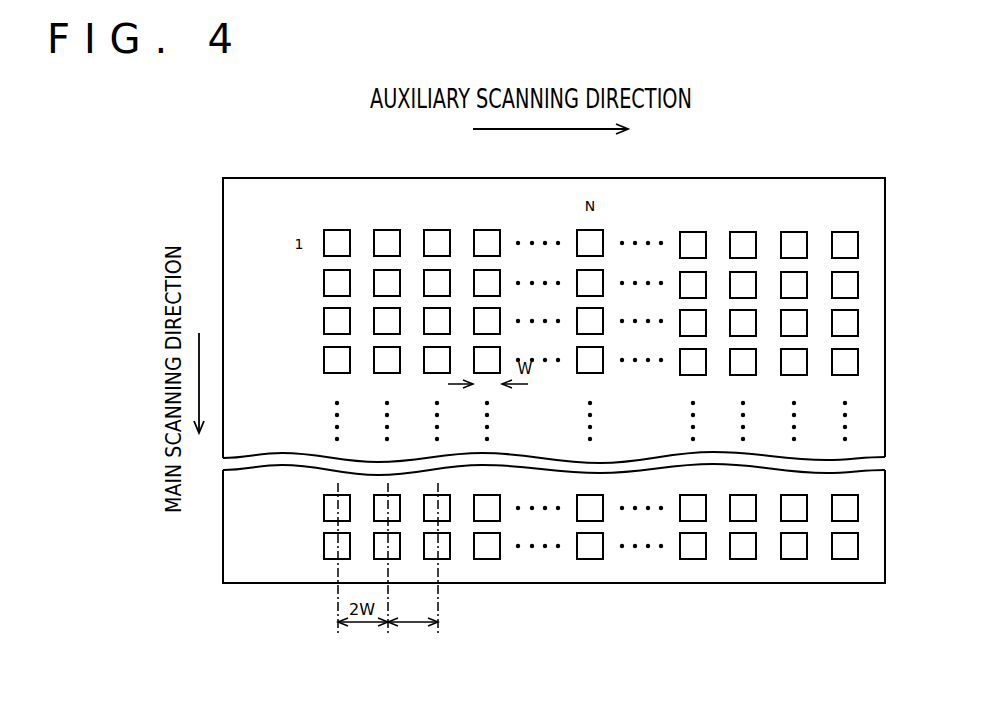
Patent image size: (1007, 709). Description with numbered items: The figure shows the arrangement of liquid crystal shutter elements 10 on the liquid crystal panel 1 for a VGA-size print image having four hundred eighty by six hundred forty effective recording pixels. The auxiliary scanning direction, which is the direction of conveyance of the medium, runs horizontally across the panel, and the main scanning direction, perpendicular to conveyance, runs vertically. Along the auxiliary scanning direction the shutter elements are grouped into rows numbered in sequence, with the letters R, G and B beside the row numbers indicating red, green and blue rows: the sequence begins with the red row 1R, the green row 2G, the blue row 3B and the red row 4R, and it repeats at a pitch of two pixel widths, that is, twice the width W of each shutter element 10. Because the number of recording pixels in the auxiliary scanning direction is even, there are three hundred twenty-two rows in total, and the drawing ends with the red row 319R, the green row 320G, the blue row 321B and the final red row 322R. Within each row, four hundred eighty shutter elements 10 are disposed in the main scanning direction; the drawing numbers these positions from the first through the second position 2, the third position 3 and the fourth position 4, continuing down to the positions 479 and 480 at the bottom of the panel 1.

The liquid crystal panel 1 is at (223, 207).
The liquid crystal shutter element 10 is at (604, 236).
The first red liquid crystal shutter element row 1R is at (337, 319).
The second green liquid crystal shutter element row 2G is at (387, 319).
The third blue liquid crystal shutter element row 3B is at (437, 319).
The fourth red liquid crystal shutter element row 4R is at (487, 319).
The 319th red liquid crystal shutter element row 319R is at (693, 319).
The 320th green liquid crystal shutter element row 320G is at (743, 319).
The 321st blue liquid crystal shutter element row 321B is at (794, 319).
The 322nd red liquid crystal shutter element row 322R is at (845, 319).
The second element position in main scanning direction 2 is at (479, 284).
The third element position in main scanning direction 3 is at (479, 322).
The fourth element position in main scanning direction 4 is at (479, 361).
The 479th element position in main scanning direction 479 is at (572, 508).
The 480th element position in main scanning direction 480 is at (572, 546).